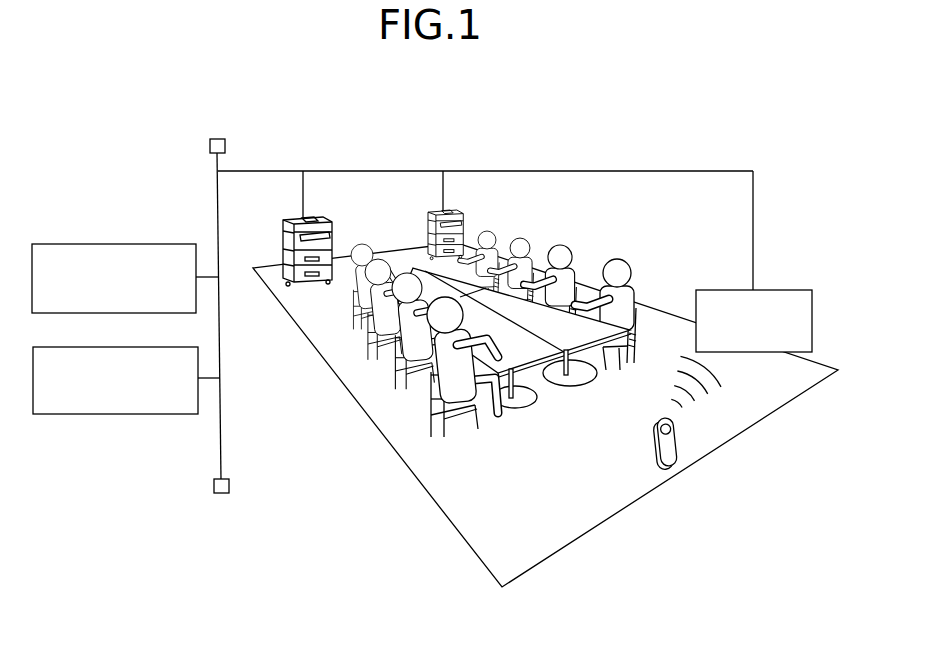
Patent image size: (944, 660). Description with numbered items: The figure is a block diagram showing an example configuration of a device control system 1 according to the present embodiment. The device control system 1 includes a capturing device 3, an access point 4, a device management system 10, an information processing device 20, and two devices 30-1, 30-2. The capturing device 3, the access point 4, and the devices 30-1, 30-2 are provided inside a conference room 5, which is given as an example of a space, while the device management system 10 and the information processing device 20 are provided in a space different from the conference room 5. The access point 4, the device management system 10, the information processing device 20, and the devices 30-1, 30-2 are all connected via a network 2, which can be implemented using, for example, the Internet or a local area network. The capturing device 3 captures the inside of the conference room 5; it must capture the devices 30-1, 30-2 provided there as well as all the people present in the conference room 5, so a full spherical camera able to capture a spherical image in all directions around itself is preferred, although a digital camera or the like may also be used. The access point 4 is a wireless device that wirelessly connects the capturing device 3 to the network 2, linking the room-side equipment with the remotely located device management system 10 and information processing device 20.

The device control system 1 is at (562, 122).
The network 2 is at (259, 160).
The capturing device 3 is at (680, 439).
The access point 4 is at (776, 287).
The conference room 5 is at (455, 503).
The device management system 10 is at (165, 243).
The information processing device 20 is at (170, 331).
The device 30-1 is at (320, 203).
The device 30-2 is at (455, 199).